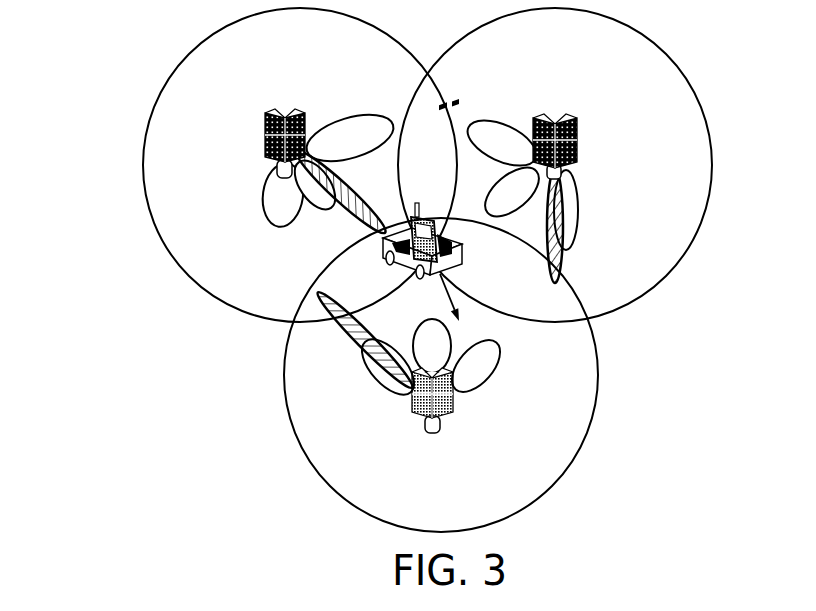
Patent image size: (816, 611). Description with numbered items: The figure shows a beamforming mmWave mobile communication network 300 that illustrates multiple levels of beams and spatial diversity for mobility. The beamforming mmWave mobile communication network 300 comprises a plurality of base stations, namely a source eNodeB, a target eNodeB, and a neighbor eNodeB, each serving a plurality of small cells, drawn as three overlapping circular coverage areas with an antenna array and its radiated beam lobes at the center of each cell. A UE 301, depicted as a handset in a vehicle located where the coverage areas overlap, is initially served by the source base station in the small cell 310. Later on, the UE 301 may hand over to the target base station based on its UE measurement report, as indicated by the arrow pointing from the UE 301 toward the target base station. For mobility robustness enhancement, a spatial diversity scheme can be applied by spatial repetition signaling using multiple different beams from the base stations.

The beamforming mmWave mobile communication network 300 is at (104, 46).
The UE 301 is at (418, 202).
The small cell 310 is at (279, 283).